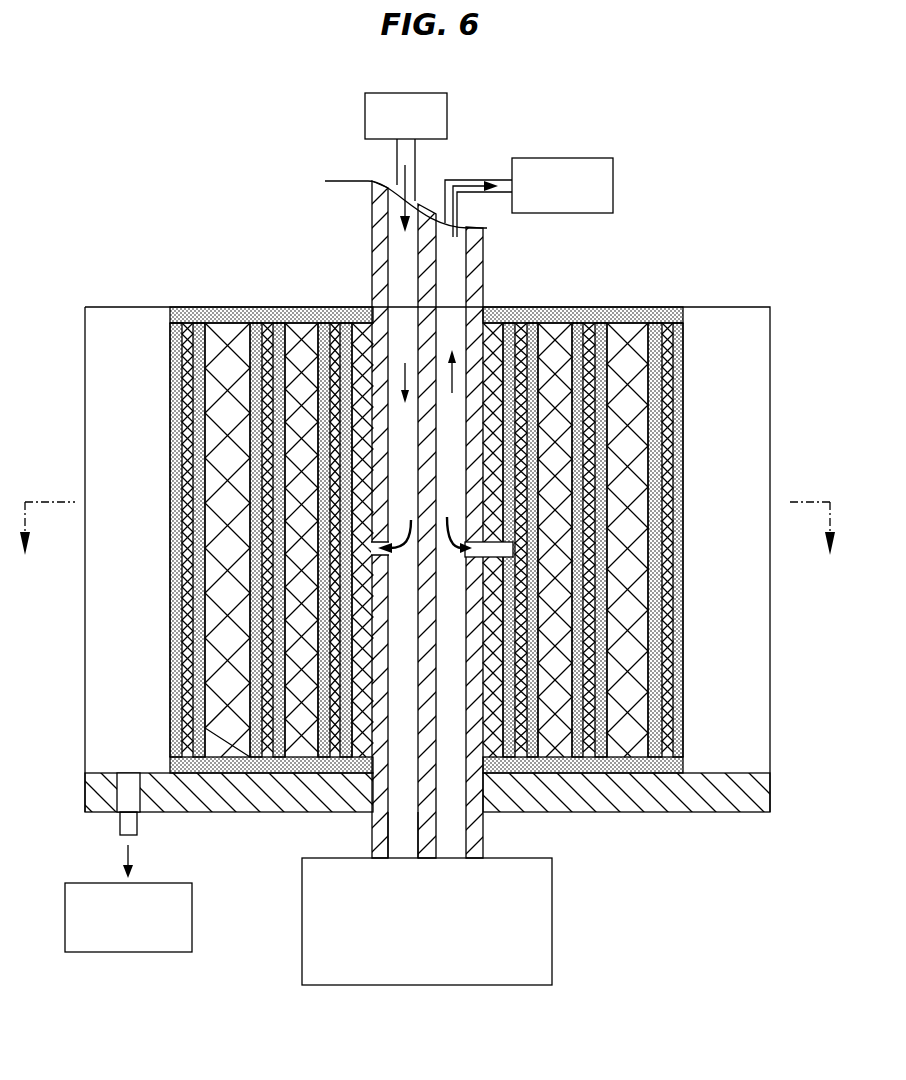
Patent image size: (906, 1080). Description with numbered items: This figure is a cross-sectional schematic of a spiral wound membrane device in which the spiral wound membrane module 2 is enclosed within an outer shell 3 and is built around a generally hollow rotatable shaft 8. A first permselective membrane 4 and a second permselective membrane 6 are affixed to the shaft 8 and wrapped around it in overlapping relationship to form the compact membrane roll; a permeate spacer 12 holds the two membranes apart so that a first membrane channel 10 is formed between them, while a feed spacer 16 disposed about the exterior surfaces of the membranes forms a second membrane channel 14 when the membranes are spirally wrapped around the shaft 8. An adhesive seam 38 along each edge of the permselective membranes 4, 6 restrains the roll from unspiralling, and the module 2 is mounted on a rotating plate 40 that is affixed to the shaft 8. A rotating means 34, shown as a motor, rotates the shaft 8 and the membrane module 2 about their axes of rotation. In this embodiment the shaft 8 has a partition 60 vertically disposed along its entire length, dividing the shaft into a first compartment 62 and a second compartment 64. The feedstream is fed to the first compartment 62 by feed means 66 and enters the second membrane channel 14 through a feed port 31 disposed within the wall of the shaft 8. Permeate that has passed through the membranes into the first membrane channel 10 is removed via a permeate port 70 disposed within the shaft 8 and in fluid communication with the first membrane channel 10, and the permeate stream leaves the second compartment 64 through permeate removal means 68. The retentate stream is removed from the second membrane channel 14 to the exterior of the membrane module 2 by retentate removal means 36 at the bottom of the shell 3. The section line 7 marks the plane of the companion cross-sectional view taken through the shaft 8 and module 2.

The spiral wound membrane module 2 is at (716, 322).
The outer shell 3 is at (85, 663).
The first permselective membrane 4 is at (172, 545).
The second permselective membrane 6 is at (205, 497).
The section line 7- 7 is at (427, 542).
The rotatable shaft 8 is at (372, 232).
The first membrane channel 10 is at (185, 402).
The permeate spacer 12 is at (183, 428).
The second membrane channel 14 is at (219, 330).
The feed spacer 16 is at (232, 622).
The feed port 31 is at (385, 540).
The rotating means 34 is at (330, 858).
The retentate removal means 36 is at (138, 828).
The adhesive seam 38 is at (667, 320).
The rotating plate 40 is at (738, 803).
The partition 60 is at (385, 808).
The first compartment 62 is at (396, 699).
The second compartment 64 is at (443, 699).
The feed means 66 is at (420, 93).
The permeate removal means 68 is at (588, 158).
The permeate port 70 is at (466, 558).